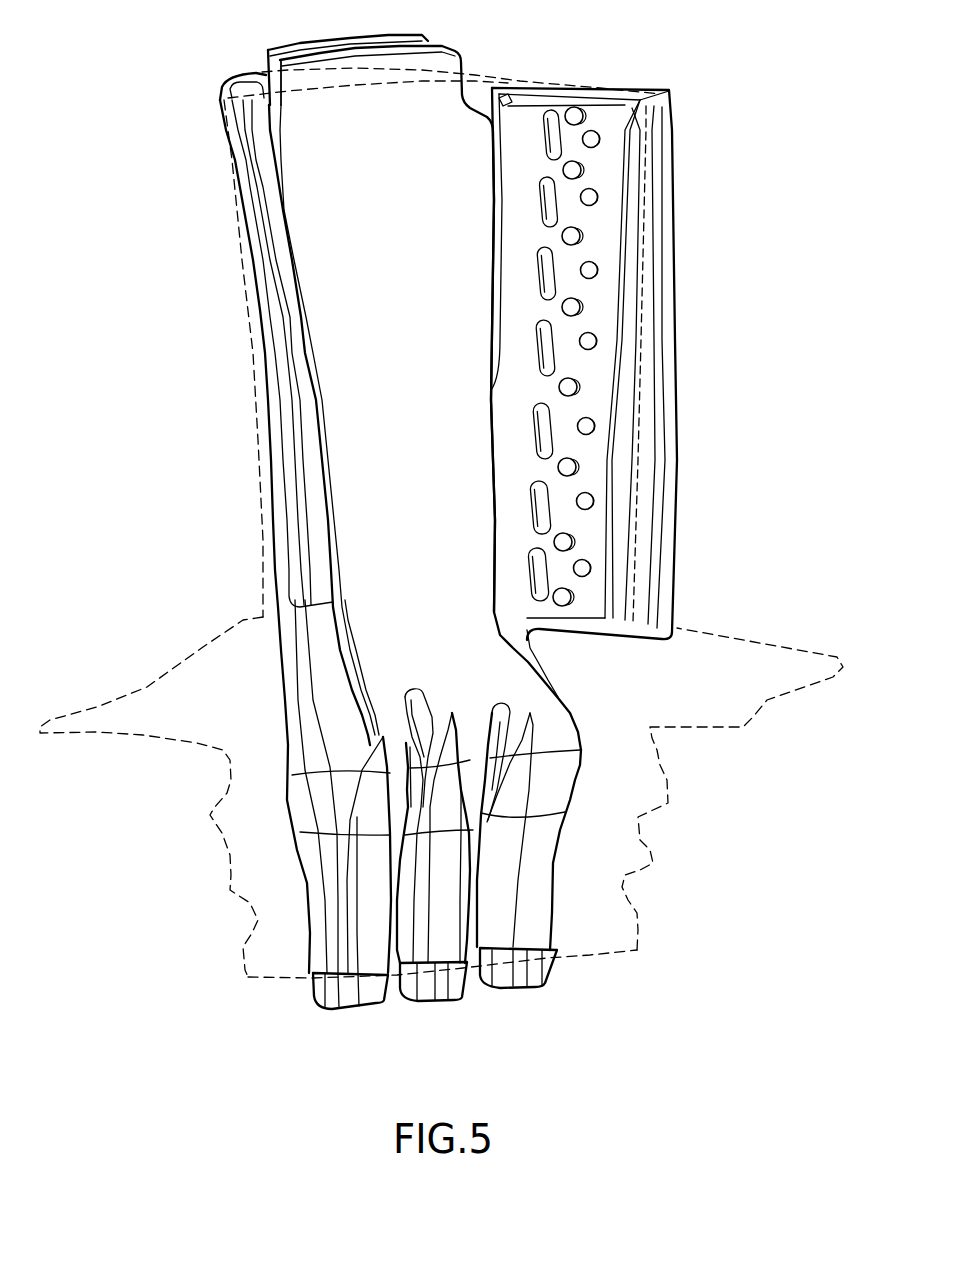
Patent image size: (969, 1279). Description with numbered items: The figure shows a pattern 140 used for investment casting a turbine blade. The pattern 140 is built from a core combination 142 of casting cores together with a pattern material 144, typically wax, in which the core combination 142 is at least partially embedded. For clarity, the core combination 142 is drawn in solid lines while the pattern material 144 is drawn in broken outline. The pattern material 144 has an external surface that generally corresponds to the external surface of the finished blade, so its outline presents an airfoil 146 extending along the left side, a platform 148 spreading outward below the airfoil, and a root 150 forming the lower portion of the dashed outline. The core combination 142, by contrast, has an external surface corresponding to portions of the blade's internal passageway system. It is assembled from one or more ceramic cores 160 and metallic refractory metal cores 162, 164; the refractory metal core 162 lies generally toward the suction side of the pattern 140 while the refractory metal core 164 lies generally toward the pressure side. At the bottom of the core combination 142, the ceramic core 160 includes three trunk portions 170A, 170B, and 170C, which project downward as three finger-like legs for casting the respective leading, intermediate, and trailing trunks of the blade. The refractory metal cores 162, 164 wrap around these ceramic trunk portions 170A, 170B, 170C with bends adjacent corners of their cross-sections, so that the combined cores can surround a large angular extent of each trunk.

The pattern 140 is at (190, 297).
The core combination 142 is at (612, 966).
The pattern material 144 is at (640, 930).
The airfoil 146 is at (243, 402).
The platform 148 is at (116, 676).
The root 150 is at (672, 855).
The ceramic core 160 is at (312, 713).
The refractory metal core 162 is at (296, 798).
The refractory metal core 164 is at (365, 820).
The trunk portion 170A is at (365, 1010).
The trunk portion 170B is at (439, 1004).
The trunk portion 170C is at (535, 988).